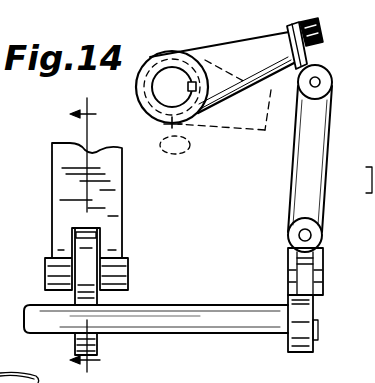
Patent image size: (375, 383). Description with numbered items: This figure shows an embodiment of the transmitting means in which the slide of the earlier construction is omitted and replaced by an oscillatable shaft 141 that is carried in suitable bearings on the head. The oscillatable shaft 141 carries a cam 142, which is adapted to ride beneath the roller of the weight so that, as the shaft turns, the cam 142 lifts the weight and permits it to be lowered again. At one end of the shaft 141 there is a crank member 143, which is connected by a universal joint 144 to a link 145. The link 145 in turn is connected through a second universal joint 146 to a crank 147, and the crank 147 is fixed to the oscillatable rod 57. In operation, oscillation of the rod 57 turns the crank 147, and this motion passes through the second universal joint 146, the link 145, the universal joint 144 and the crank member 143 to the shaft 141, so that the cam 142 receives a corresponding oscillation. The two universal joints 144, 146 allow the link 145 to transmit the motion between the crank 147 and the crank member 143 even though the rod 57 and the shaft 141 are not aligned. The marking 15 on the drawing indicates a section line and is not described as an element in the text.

The crank 147 is at (247, 46).
The second universal joint 146 is at (312, 60).
The link 145 is at (318, 191).
The universal joint 144 is at (318, 263).
The crank member 143 is at (303, 295).
The oscillatable shaft 141 is at (178, 318).
The cam 142 is at (74, 348).
The oscillatable rod 57 is at (172, 128).
The section line 15 is at (96, 235).